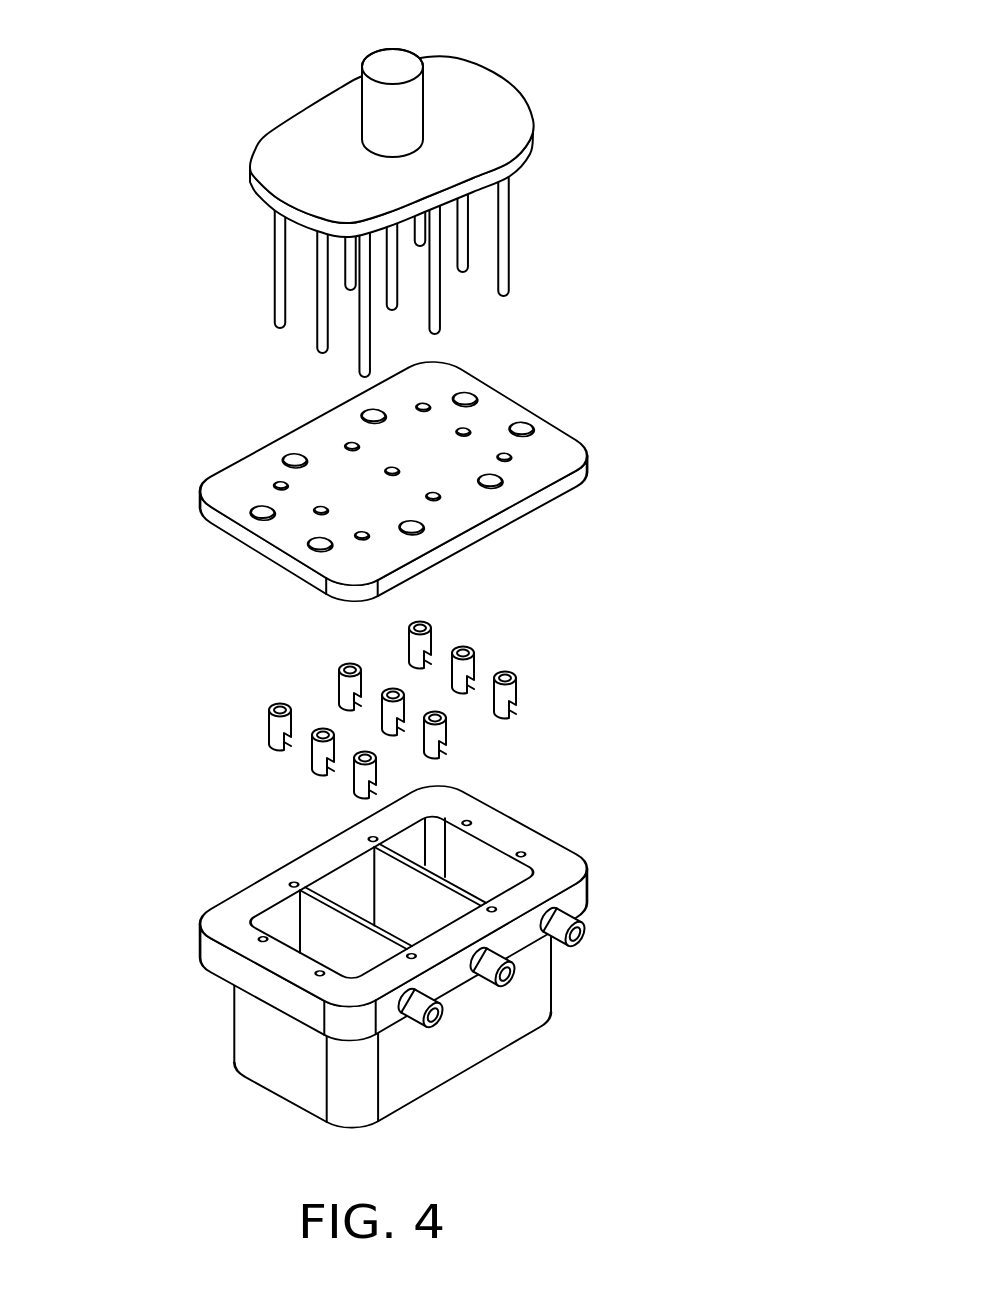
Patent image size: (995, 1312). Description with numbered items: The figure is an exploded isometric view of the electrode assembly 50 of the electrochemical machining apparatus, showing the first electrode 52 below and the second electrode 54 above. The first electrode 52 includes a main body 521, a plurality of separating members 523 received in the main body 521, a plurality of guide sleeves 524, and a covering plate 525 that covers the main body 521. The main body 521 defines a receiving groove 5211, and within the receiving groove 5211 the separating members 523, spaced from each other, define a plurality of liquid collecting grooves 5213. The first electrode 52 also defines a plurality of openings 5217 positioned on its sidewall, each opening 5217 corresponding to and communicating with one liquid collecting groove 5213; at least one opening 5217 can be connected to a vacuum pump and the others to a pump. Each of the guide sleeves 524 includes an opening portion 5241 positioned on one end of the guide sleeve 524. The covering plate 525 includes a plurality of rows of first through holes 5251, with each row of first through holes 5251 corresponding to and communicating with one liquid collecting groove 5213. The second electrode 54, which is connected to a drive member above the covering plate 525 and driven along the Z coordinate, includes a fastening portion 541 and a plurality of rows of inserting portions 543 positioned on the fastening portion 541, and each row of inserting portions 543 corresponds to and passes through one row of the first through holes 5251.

The electrode assembly 50 is at (403, 576).
The first electrode 52 is at (453, 744).
The main body 521 is at (537, 985).
The receiving groove 5211 is at (277, 900).
The liquid collecting groove 5213 is at (350, 873).
The opening 5217 is at (505, 977).
The separating member 523 is at (457, 890).
The guide sleeve 524 is at (516, 687).
The opening portion 5241 is at (447, 745).
The covering plate 525 is at (426, 481).
The first through hole 5251 is at (504, 456).
The second electrode 54 is at (474, 213).
The fastening portion 541 is at (652, 200).
The inserting portion 543 is at (506, 214).